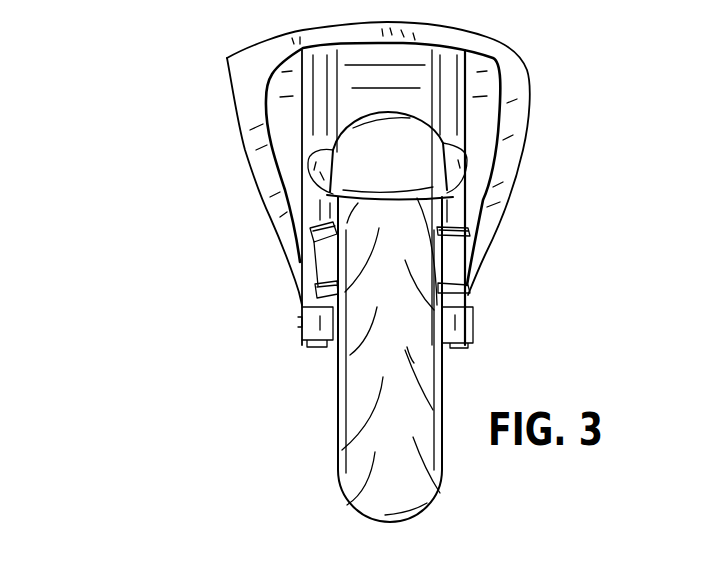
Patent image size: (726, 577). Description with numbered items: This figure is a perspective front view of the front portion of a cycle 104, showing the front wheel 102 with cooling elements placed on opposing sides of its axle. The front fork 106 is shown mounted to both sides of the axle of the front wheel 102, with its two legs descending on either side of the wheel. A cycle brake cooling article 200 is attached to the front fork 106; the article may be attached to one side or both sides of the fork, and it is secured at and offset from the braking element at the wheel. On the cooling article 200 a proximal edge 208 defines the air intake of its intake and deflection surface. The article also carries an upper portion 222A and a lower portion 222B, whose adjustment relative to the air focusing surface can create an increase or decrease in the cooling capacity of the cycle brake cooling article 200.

The front wheel 102 is at (353, 415).
The cycle 104 is at (648, 208).
The front fork 106 is at (453, 118).
The cycle brake cooling article 200 is at (300, 273).
The proximal edge 208 is at (453, 265).
The upper portion 222A is at (320, 240).
The lower portion 222B is at (320, 305).